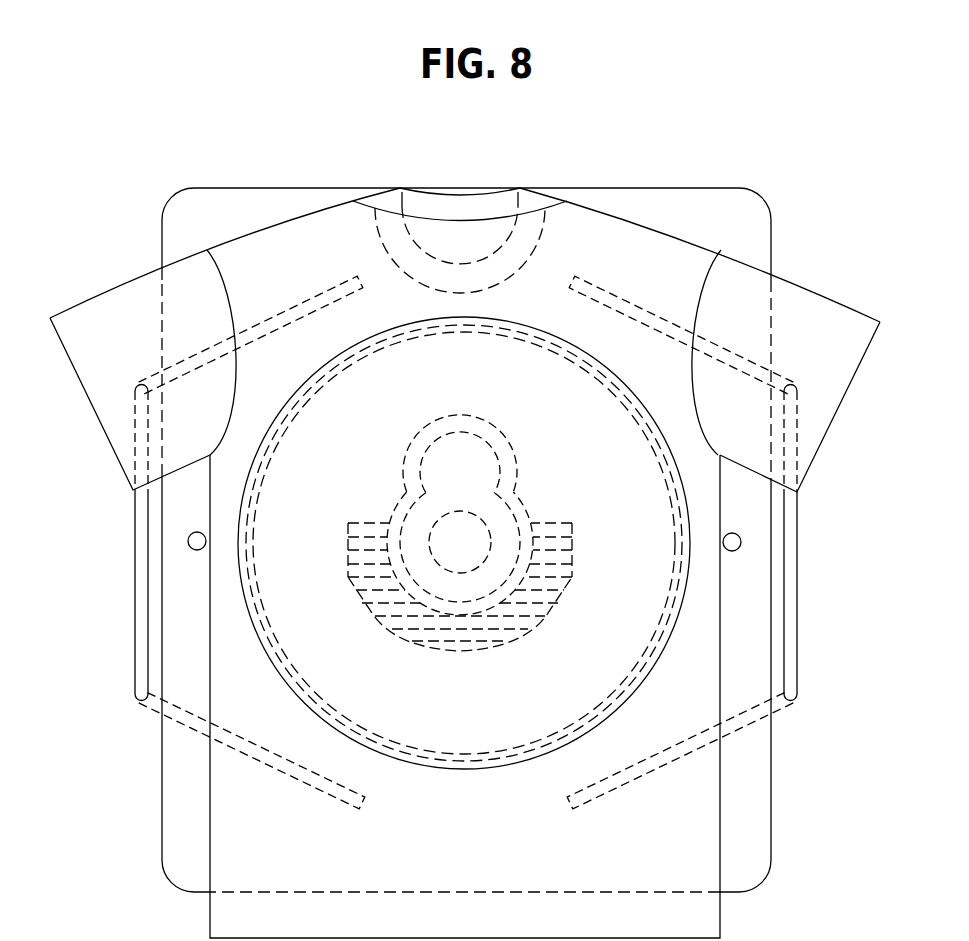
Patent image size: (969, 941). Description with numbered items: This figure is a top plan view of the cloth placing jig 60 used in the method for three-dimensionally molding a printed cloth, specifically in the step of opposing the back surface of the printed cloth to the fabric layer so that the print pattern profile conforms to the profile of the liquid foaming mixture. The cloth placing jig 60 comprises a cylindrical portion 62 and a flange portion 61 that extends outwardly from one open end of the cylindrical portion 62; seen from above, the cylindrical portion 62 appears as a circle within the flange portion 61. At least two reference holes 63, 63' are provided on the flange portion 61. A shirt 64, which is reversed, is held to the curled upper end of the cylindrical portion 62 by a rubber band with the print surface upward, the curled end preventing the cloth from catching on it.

The cloth placing jig 60 is at (639, 96).
The flange portion 61 is at (683, 212).
The cylindrical portion 62 is at (613, 680).
The reference hole 63 is at (708, 542).
The reference hole 63' is at (219, 542).
The shirt 64 is at (265, 255).